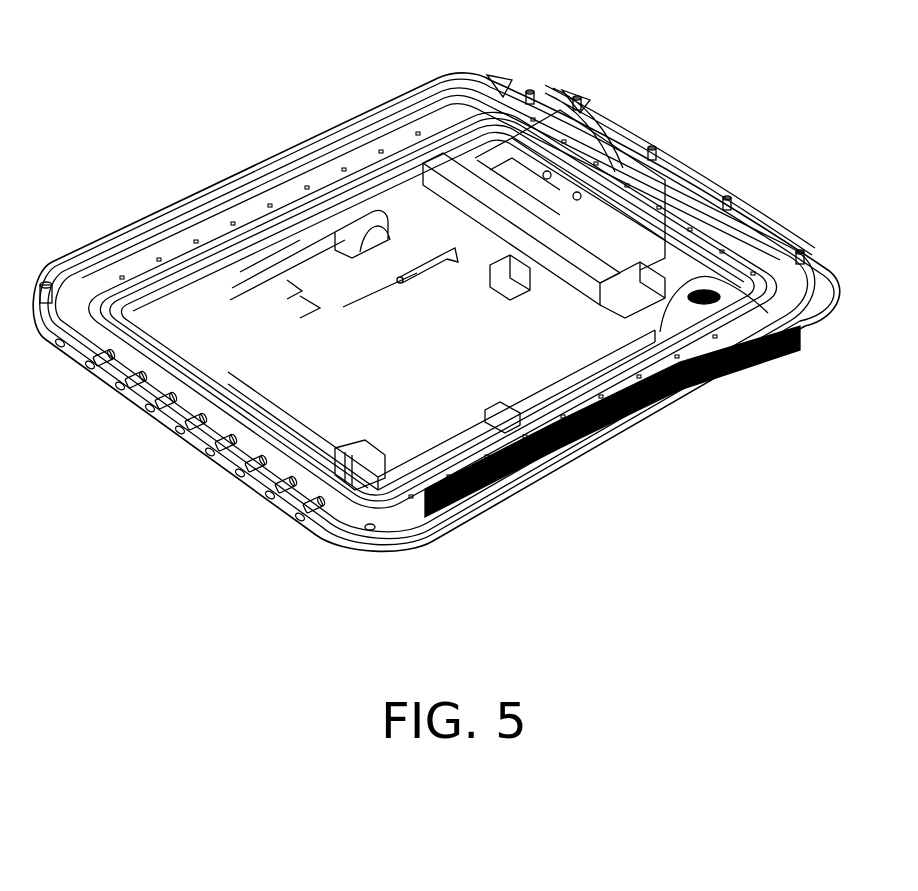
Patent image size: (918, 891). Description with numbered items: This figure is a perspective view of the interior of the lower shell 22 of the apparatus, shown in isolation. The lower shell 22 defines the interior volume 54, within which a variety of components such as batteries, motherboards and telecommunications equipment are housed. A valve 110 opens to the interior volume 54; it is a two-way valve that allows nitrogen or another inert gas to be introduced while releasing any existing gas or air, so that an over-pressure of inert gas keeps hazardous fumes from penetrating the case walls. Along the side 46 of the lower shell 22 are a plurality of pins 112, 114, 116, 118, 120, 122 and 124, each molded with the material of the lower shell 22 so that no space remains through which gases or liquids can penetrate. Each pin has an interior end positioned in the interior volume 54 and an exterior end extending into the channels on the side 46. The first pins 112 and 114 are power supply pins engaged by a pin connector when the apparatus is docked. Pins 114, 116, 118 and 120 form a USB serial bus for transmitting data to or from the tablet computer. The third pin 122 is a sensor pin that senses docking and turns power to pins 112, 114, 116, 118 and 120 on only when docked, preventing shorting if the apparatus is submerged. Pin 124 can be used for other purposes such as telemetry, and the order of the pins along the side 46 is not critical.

The lower shell 22 is at (707, 177).
The side 46 is at (100, 378).
The interior volume 54 is at (541, 359).
The valve 110 is at (714, 291).
The first pin 112 is at (118, 400).
The first pin 114 is at (148, 418).
The second pin 116 is at (180, 436).
The second pin 118 is at (210, 460).
The second pin 120 is at (242, 480).
The sensor pin 122 is at (270, 503).
The pin 124 is at (300, 523).